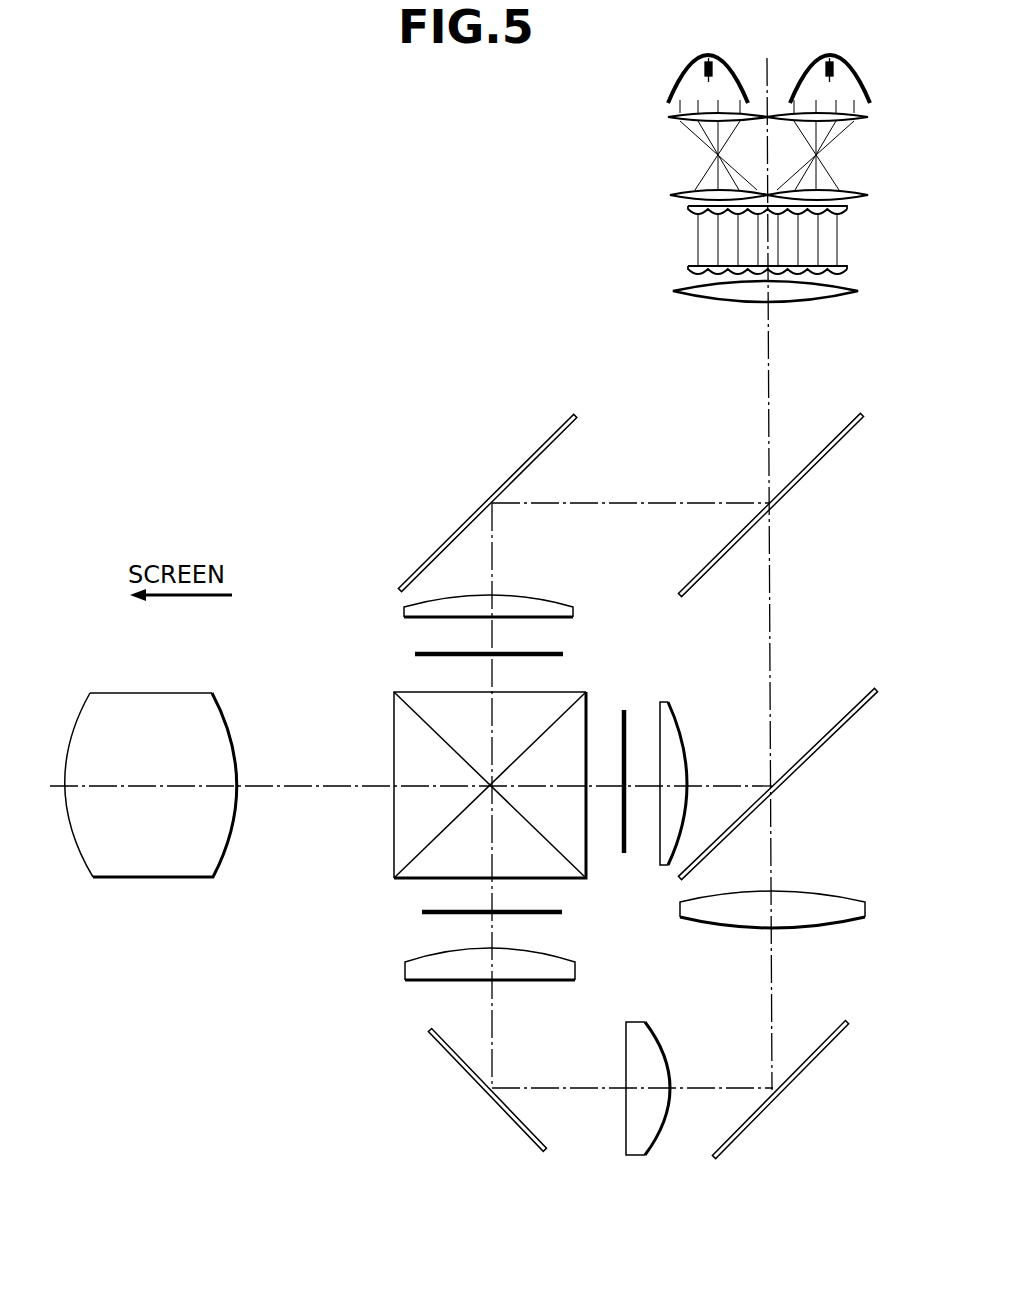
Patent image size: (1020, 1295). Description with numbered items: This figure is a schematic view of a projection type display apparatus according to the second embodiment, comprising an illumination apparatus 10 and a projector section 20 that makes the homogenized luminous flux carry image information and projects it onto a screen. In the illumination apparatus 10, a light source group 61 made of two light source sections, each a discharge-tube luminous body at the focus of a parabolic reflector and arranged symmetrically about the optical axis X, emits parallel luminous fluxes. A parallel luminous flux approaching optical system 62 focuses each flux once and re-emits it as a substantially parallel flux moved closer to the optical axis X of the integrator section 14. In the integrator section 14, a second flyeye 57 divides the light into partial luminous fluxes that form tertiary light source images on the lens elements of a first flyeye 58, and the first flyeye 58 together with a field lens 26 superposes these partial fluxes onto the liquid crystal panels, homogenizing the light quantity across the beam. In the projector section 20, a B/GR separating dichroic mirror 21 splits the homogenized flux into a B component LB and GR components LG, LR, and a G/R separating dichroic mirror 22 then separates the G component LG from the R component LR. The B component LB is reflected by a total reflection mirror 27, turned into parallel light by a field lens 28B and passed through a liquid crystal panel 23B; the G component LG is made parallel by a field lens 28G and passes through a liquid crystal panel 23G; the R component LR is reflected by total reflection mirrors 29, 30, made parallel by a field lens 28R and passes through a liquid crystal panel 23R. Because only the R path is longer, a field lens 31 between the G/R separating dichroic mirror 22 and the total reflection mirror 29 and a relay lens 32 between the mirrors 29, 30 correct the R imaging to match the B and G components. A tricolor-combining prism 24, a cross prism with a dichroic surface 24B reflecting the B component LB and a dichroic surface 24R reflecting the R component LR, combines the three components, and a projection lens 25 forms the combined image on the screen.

The illumination apparatus 10 is at (690, 129).
The integrator section 14 is at (748, 247).
The projector section 20 is at (339, 283).
The B/GR separating dichroic mirror 21 is at (832, 450).
The G/R separating dichroic mirror 22 is at (832, 743).
The liquid crystal panel 23B is at (552, 650).
The liquid crystal panel 23G is at (627, 723).
The liquid crystal panel 23R is at (550, 917).
The tricolor-combining prism 24 is at (490, 781).
The dichroic surface 24B is at (555, 722).
The dichroic surface 24R is at (573, 852).
The projection lens 25 is at (190, 708).
The field lens 26 is at (842, 301).
The total reflection mirror 27 is at (525, 458).
The field lens 28B is at (550, 607).
The field lens 28G is at (683, 747).
The field lens 28R is at (410, 972).
The total reflection mirror 29 is at (808, 1067).
The total reflection mirror 30 is at (475, 1088).
The field lens 31 is at (820, 915).
The relay lens 32 is at (645, 1047).
The second flyeye 57 is at (847, 210).
The first flyeye 58 is at (847, 270).
The light source group 61 is at (648, 86).
The parallel luminous flux approaching optical system 62 is at (656, 159).
The optical axis X is at (768, 370).
The B component LB is at (647, 502).
The G component LG is at (735, 783).
The R component LR is at (775, 857).